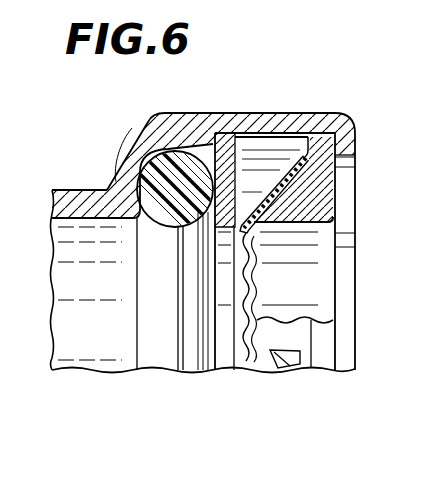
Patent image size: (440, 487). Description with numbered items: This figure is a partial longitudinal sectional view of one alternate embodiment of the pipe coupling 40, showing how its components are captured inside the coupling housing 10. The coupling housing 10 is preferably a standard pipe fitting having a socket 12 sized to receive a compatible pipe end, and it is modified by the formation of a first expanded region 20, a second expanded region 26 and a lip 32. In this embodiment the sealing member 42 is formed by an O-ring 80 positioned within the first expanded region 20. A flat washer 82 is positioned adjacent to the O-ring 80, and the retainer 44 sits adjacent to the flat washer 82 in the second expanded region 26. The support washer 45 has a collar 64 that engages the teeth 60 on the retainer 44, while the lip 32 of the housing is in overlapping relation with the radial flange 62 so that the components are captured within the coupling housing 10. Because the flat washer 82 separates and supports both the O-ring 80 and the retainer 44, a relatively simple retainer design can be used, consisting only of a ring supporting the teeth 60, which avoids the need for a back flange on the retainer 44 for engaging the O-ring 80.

The pipe coupling housing 10 is at (80, 190).
The socket 12 is at (107, 345).
The first expanded region 20 is at (163, 112).
The second expanded region 26 is at (250, 113).
The lip 32 is at (352, 152).
The pipe coupling 40 is at (253, 393).
The sealing member 42 is at (165, 215).
The retainer 44 is at (270, 157).
The support washer 45 is at (303, 290).
The teeth 60 is at (270, 348).
The radial flange 62 is at (327, 170).
The collar 64 is at (300, 222).
The O-ring 80 is at (170, 177).
The flat washer 82 is at (217, 296).